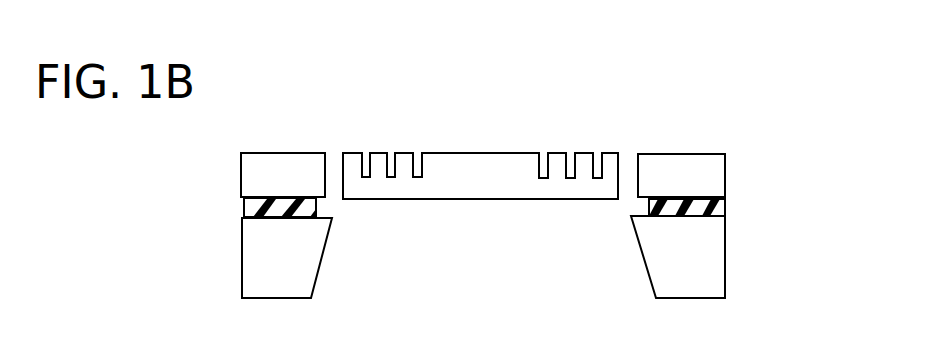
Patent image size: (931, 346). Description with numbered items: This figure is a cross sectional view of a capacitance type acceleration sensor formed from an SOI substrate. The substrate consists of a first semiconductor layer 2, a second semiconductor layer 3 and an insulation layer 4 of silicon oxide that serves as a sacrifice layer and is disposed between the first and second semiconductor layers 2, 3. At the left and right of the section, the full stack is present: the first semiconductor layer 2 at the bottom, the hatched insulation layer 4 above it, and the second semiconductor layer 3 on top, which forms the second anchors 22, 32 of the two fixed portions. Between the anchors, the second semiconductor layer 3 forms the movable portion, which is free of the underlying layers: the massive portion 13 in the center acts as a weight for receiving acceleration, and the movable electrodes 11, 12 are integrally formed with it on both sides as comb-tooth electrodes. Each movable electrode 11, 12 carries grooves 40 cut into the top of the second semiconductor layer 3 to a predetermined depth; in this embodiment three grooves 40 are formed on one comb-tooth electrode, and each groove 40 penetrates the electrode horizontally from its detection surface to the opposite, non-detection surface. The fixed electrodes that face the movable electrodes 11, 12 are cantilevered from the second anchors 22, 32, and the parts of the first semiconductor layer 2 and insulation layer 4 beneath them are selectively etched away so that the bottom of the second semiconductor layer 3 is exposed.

The first semiconductor layer 2 is at (705, 266).
The second semiconductor layer 3 is at (705, 178).
The insulation layer 4 is at (705, 205).
The movable electrode 11 is at (375, 153).
The movable electrode 12 is at (582, 153).
The massive portion 13 is at (477, 168).
The second anchor 22 is at (268, 162).
The second anchor 32 is at (680, 162).
The groove 40 is at (417, 153).